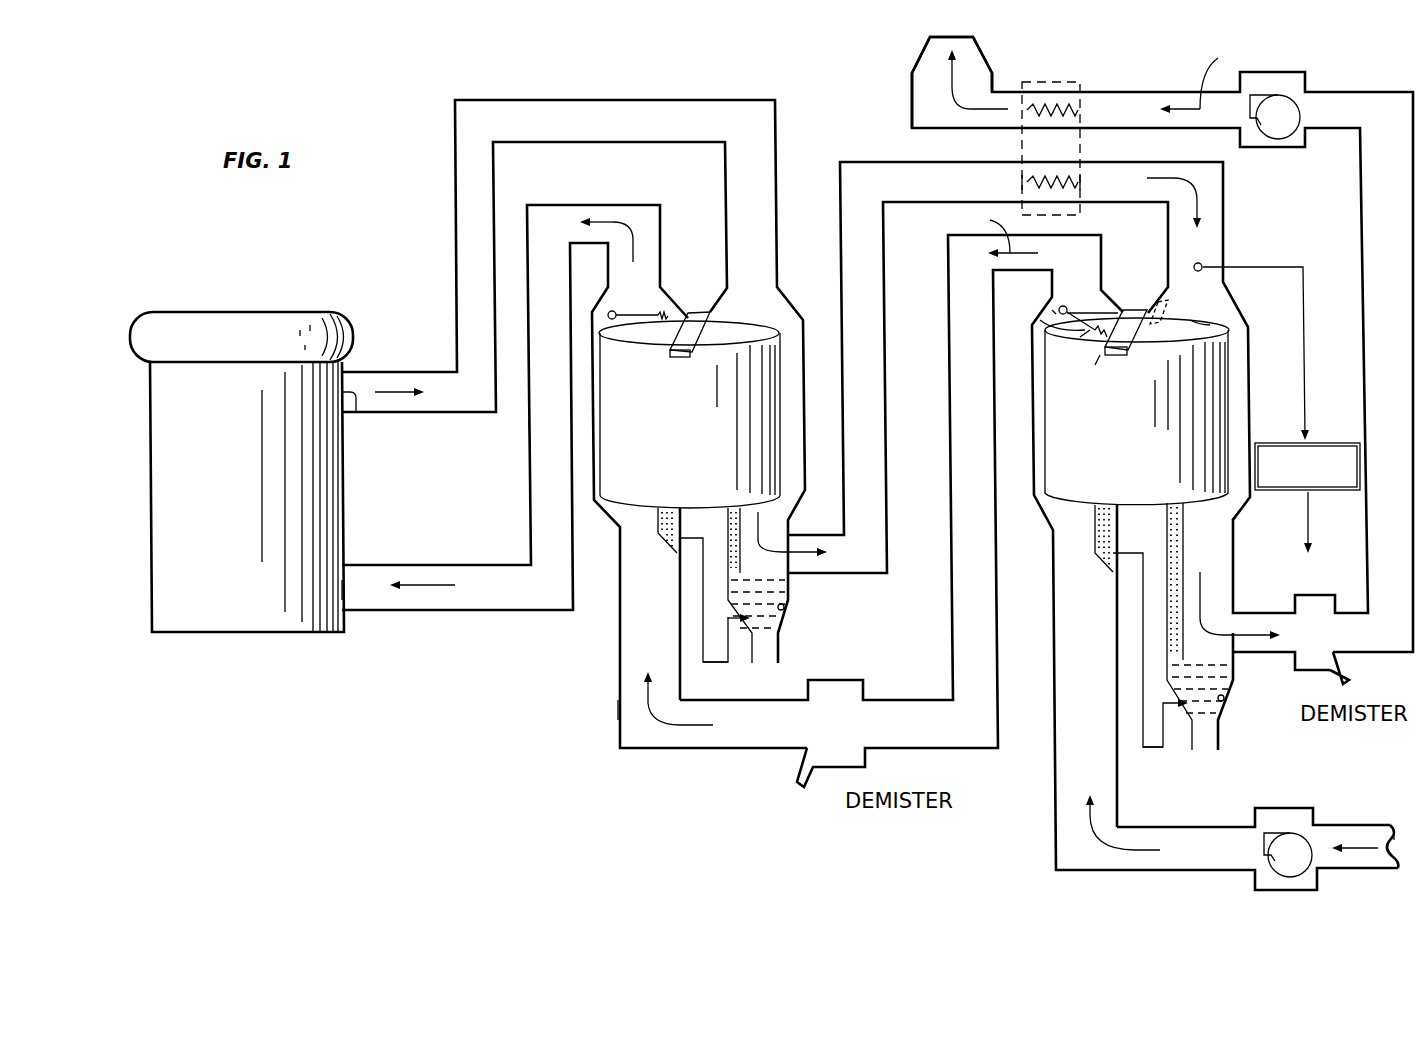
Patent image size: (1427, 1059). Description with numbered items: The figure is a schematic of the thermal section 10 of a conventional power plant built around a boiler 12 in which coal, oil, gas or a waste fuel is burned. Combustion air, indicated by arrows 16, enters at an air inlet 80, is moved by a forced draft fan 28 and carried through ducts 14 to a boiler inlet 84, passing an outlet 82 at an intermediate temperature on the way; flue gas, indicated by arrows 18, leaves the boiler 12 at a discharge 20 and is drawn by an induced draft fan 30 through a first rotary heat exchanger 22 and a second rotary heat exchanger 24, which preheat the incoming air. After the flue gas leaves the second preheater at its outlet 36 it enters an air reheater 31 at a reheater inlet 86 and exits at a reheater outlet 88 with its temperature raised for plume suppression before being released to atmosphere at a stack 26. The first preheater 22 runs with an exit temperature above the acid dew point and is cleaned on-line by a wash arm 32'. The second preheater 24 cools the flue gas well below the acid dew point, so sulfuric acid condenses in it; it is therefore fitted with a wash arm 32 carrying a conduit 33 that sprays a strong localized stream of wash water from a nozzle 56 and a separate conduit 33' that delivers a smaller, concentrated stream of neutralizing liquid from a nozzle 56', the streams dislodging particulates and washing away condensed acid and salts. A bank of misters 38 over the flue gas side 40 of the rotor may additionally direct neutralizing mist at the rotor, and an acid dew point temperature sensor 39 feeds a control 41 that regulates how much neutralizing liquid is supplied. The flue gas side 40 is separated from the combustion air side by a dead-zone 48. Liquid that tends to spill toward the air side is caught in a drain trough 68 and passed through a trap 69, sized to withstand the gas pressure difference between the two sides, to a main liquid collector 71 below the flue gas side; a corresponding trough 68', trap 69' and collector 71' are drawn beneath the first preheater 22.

The thermal section 10 is at (588, 679).
The boiler 12 is at (250, 618).
The ducts 14 is at (530, 445).
The combustion air arrows 16 is at (455, 585).
The flue gas arrows 18 is at (392, 387).
The discharge 20 is at (347, 397).
The first rotary heat exchanger 22 is at (767, 418).
The second rotary heat exchanger 24 is at (1222, 392).
The stack 26 is at (912, 97).
The forced draft fan 28 is at (1285, 832).
The induced draft fan 30 is at (1292, 130).
The air reheater 31 is at (1060, 82).
The wash arm 32 is at (1041, 317).
The wash arm 32' is at (660, 297).
The conduit 33 is at (1088, 290).
The conduit 33' is at (1072, 355).
The outlet 36 is at (1212, 530).
The bank of misters 38 is at (1180, 308).
The acid dew point temperature sensor 39 is at (1200, 263).
The flue gas side 40 is at (1193, 328).
The control 41 is at (1338, 490).
The dead-zone 48 is at (680, 353).
The nozzle 56 is at (1128, 298).
The nozzle 56' is at (1083, 390).
The drain trough 68 is at (1094, 550).
The inlet tube 68' is at (652, 544).
The trap 69 is at (1168, 771).
The trap 69' is at (742, 679).
The main liquid collector 71 is at (1192, 626).
The sump 71' is at (779, 585).
The air inlet 80 is at (1400, 837).
The outlet 82 is at (1048, 307).
The boiler inlet 84 is at (342, 587).
The reheater inlet 86 is at (1010, 183).
The reheater outlet 88 is at (1083, 187).